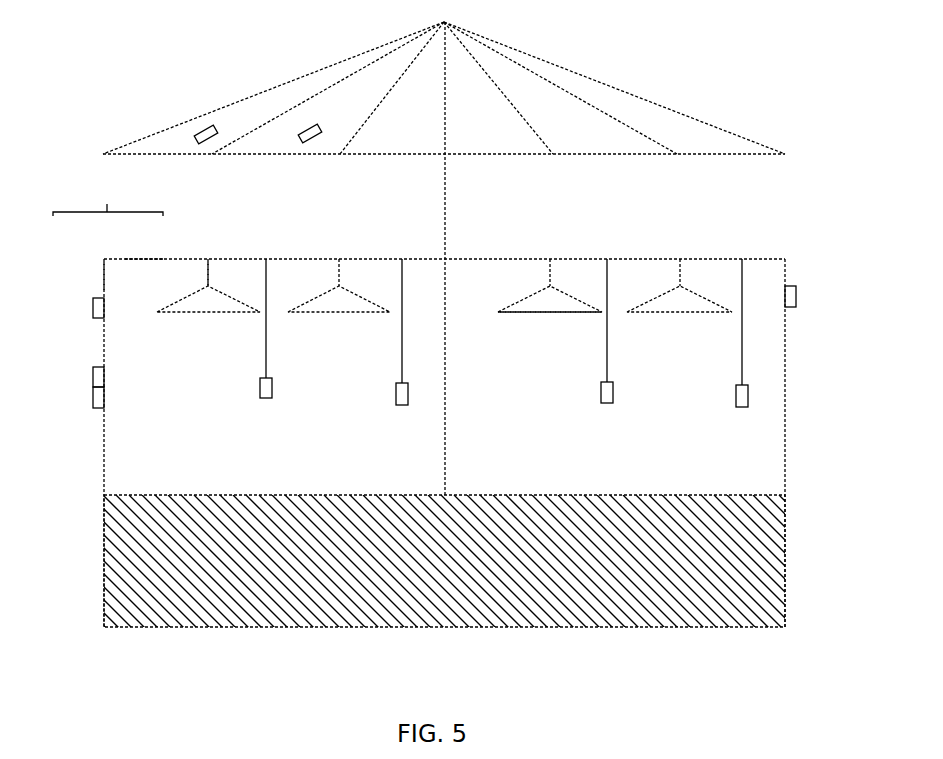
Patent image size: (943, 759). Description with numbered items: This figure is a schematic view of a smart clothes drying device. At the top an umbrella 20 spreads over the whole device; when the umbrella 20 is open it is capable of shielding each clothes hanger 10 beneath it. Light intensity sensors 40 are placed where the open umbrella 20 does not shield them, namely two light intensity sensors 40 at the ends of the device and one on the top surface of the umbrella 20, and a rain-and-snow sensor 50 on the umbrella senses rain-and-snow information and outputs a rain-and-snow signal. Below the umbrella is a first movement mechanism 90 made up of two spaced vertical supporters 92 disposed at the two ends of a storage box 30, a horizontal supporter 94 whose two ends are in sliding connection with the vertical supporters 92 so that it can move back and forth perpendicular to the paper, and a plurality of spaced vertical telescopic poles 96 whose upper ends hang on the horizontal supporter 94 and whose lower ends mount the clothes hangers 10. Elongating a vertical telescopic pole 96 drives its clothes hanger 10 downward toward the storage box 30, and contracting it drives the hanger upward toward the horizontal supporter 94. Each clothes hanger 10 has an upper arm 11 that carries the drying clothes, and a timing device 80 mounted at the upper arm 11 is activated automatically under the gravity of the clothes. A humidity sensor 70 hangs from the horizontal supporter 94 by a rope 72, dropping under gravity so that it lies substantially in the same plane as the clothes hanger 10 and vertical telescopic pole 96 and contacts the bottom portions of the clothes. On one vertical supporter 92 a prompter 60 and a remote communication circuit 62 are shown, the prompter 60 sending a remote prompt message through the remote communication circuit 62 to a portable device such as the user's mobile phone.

The clothes hanger 10 is at (680, 286).
The upper arm 11 is at (505, 307).
The umbrella 20 is at (592, 128).
The storage box 30 is at (787, 557).
The light intensity sensor 40 is at (300, 143).
The rain-and-snow sensor 50 is at (201, 124).
The prompter 60 is at (93, 370).
The remote communication circuit 62 is at (93, 400).
The humidity sensor 70 is at (272, 388).
The rope 72 is at (266, 333).
The timing device 80 is at (519, 302).
The first movement mechanism 90 is at (108, 200).
The vertical supporter 92 is at (103, 272).
The horizontal supporter 94 is at (145, 259).
The vertical telescopic pole 96 is at (208, 278).